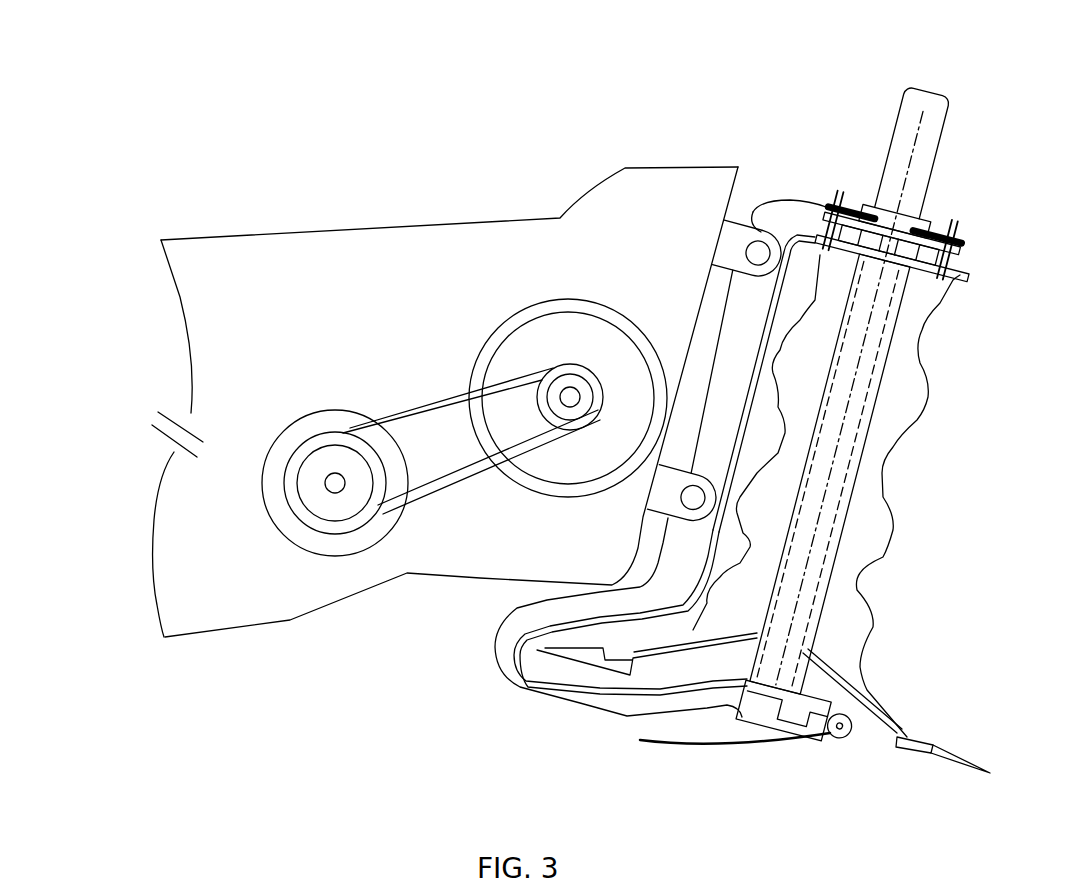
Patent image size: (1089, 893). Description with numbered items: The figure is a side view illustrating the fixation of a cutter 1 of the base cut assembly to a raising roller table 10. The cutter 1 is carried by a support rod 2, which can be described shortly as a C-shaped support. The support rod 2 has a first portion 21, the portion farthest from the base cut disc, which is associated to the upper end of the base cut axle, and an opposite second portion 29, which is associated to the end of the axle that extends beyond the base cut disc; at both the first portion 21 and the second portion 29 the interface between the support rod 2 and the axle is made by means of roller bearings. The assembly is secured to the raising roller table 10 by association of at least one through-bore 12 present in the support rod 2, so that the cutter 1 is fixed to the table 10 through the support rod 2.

The raising roller table 10 is at (413, 216).
The through-bore 12 is at (692, 480).
The first portion 21 is at (793, 215).
The cutter 1 is at (947, 498).
The support rod 2 is at (478, 676).
The second portion 29 is at (662, 704).